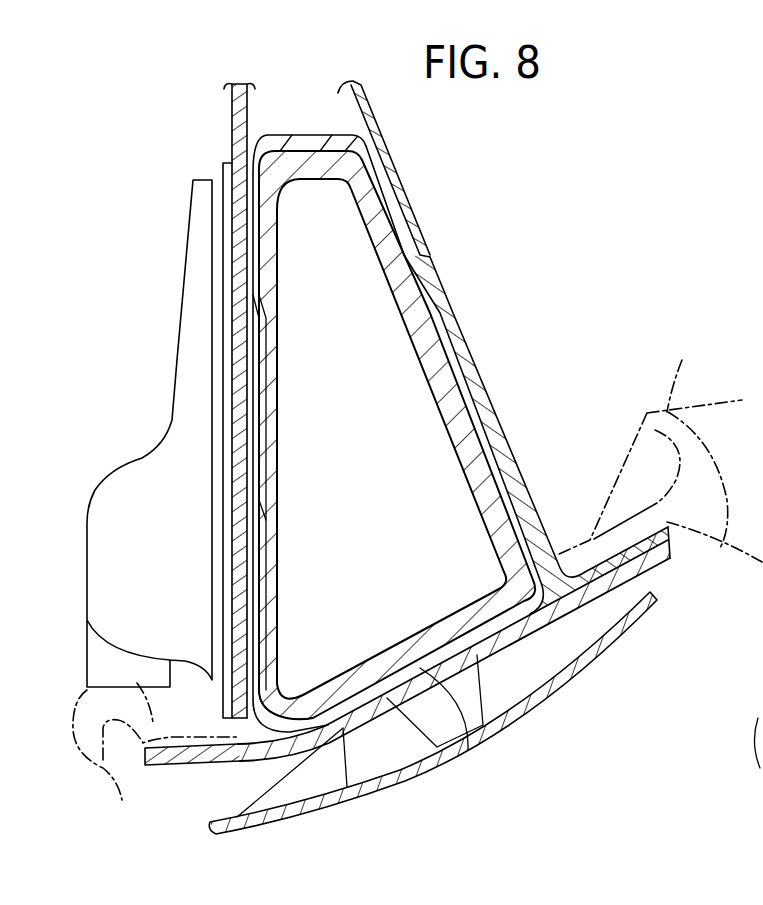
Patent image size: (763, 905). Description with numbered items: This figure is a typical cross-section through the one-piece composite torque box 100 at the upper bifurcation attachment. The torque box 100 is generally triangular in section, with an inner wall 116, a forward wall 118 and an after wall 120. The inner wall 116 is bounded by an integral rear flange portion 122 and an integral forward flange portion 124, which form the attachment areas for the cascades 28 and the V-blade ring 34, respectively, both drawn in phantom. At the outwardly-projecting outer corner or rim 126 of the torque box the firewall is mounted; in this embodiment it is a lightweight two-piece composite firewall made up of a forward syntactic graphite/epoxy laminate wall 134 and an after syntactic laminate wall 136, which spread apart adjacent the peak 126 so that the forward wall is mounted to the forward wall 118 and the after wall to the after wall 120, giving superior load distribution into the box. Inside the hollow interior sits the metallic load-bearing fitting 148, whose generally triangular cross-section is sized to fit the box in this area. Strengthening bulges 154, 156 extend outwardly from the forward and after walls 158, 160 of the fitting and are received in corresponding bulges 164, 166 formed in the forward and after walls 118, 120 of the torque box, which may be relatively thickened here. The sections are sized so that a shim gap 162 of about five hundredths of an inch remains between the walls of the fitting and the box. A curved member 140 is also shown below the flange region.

The torque box 100 is at (399, 428).
The inner wall 116 is at (468, 742).
The forward wall 118 is at (237, 361).
The after wall 120 is at (460, 318).
The rear flange portion 122 is at (660, 545).
The forward flange portion 124 is at (175, 760).
The outer corner or rim 126 is at (290, 135).
The forward syntactic GR/EP laminate wall 134 is at (232, 133).
The after syntactic GR/EP laminate wall 136 is at (503, 329).
The curved trim member 140 is at (532, 705).
The load-bearing fitting 148 is at (483, 488).
The strengthening bulge 154 is at (262, 400).
The strengthening bulge 156 is at (443, 353).
The forward wall of the fitting 158 is at (272, 623).
The after wall of the fitting 160 is at (487, 510).
The shim gap 162 is at (258, 555).
The bulge 164 is at (238, 420).
The bulge 166 is at (473, 368).
The cascades 28 is at (682, 360).
The V-blade ring 34 is at (126, 795).